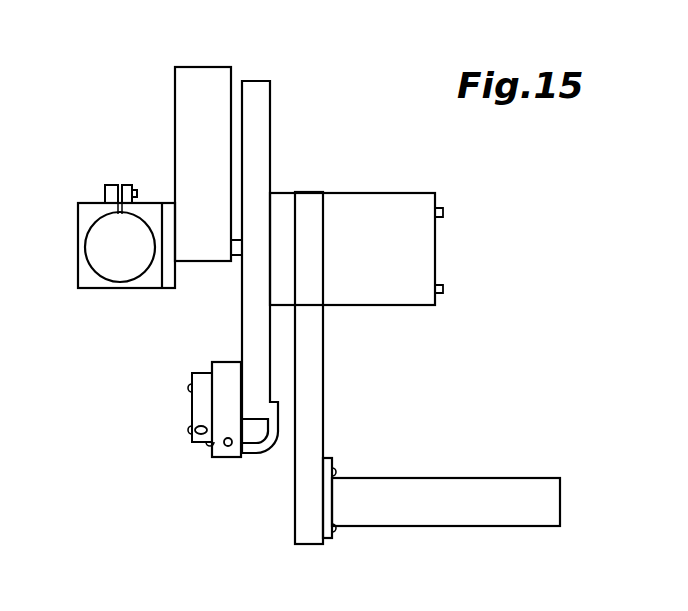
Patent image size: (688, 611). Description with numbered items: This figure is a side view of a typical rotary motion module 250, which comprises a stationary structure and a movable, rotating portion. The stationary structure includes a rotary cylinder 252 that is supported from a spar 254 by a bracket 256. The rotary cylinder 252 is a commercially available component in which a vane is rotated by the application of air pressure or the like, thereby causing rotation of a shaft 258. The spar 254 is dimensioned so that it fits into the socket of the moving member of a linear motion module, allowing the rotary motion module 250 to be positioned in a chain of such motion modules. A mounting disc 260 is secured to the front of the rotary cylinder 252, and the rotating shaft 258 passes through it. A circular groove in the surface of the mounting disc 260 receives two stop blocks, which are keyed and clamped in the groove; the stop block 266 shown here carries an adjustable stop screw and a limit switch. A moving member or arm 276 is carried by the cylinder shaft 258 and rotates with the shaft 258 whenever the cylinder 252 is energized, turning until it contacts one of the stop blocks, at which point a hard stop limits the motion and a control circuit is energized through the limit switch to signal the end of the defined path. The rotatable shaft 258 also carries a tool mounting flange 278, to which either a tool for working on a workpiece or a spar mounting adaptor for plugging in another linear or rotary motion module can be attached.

The rotary motion module 250 is at (118, 146).
The rotary cylinder 252 is at (437, 255).
The spar 254 is at (498, 477).
The bracket 256 is at (323, 403).
The shaft 258 is at (240, 258).
The mounting disc 260 is at (273, 117).
The stop block 266 is at (225, 457).
The arm 276 is at (175, 110).
The tool mounting flange 278 is at (162, 268).